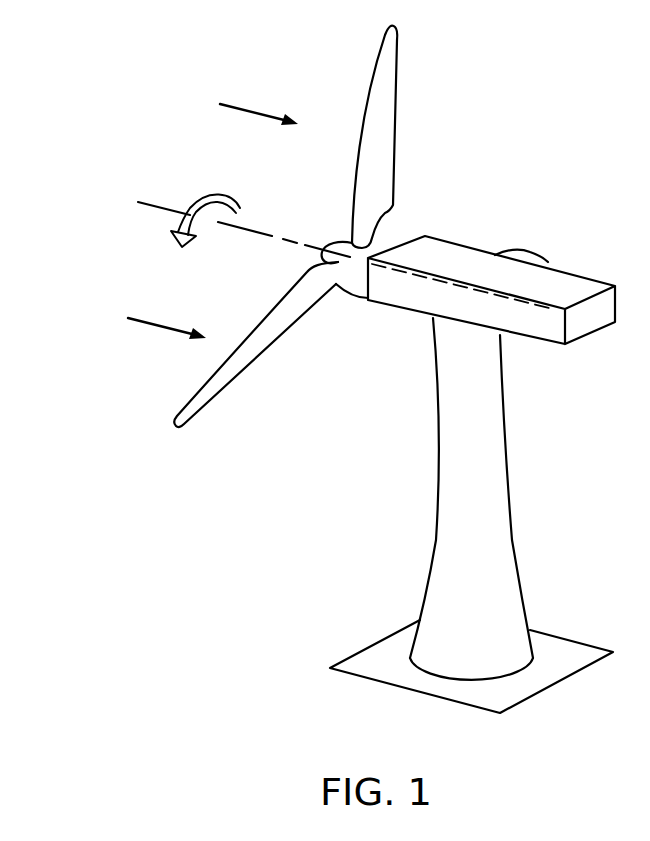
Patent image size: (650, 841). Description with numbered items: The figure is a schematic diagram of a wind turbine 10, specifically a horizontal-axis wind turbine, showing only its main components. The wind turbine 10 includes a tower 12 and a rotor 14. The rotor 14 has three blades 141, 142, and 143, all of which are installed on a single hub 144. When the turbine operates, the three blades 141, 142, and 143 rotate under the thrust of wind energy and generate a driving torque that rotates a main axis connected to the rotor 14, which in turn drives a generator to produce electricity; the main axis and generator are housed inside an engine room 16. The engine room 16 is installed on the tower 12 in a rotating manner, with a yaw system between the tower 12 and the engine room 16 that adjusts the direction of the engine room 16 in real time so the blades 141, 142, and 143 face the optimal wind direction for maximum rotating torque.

The wind turbine 10 is at (96, 72).
The tower 12 is at (500, 515).
The rotor 14 is at (407, 213).
The engine room 16 is at (580, 285).
The blade 141 is at (390, 97).
The blade 142 is at (200, 421).
The blade 143 is at (538, 252).
The hub 144 is at (343, 245).